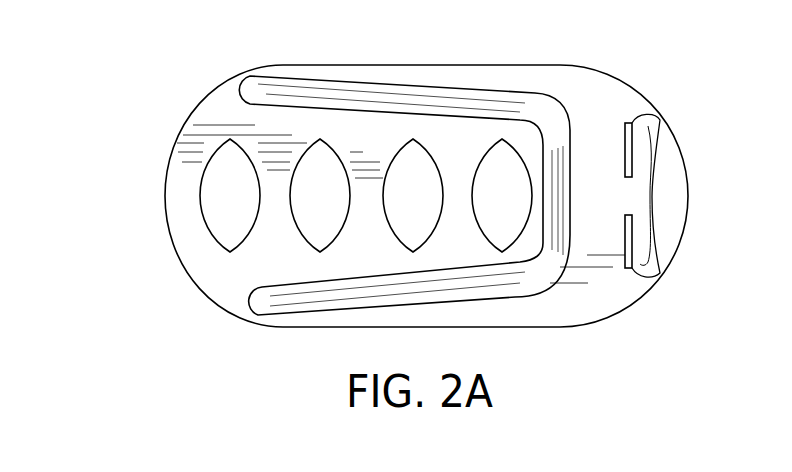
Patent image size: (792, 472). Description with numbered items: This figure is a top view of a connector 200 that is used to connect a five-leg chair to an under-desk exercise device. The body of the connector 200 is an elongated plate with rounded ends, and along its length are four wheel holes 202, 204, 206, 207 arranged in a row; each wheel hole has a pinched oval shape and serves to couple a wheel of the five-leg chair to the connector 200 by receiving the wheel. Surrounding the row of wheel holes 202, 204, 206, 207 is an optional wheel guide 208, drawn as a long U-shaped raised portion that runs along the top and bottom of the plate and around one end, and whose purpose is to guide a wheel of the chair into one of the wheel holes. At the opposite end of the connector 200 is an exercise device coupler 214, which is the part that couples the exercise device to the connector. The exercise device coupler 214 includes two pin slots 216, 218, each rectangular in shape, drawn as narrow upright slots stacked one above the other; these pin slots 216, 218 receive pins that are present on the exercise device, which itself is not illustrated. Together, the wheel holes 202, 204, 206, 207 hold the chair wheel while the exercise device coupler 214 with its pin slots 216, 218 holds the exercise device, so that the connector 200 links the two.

The connector 200 is at (638, 60).
The wheel hole 202 is at (203, 194).
The wheel hole 204 is at (303, 228).
The wheel hole 206 is at (410, 163).
The wheel hole 207 is at (491, 164).
The wheel guide 208 is at (282, 299).
The exercise device coupler 214 is at (652, 197).
The pin slot 216 is at (660, 273).
The pin slot 218 is at (632, 123).